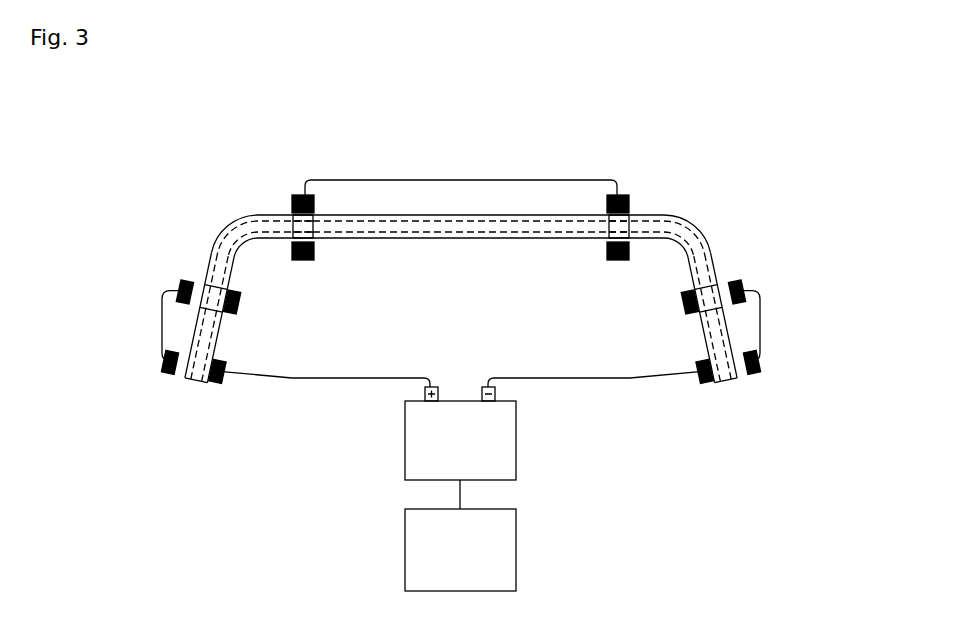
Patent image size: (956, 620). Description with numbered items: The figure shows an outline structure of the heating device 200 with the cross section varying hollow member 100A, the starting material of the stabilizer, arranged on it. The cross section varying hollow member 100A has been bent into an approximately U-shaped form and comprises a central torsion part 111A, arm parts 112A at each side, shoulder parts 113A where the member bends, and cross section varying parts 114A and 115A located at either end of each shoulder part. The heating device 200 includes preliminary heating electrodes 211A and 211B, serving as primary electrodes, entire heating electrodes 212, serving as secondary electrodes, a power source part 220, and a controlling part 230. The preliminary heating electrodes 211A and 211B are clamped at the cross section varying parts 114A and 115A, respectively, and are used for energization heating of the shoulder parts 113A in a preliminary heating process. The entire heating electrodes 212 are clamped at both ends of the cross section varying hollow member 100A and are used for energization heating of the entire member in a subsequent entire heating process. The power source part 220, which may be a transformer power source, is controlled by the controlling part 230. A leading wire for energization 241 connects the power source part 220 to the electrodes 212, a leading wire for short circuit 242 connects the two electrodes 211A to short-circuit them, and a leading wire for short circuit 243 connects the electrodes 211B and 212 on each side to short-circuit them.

The heating device 200 is at (680, 135).
The cross section varying hollow member 100A is at (734, 200).
The torsion part 111A is at (446, 216).
The arm parts 112A is at (198, 325).
The shoulder parts 113A is at (236, 214).
The cross section varying parts 114A is at (316, 200).
The cross section varying parts 115A is at (206, 283).
The preliminary heating electrodes 211A is at (300, 194).
The preliminary heating electrodes 211B is at (184, 284).
The entire heating electrodes 212 is at (170, 367).
The power source part 220 is at (503, 443).
The controlling part 230 is at (503, 554).
The leading wire for energization 241 is at (301, 382).
The leading wire for short circuit 242 is at (510, 180).
The leading wire for short circuit 243 is at (160, 343).